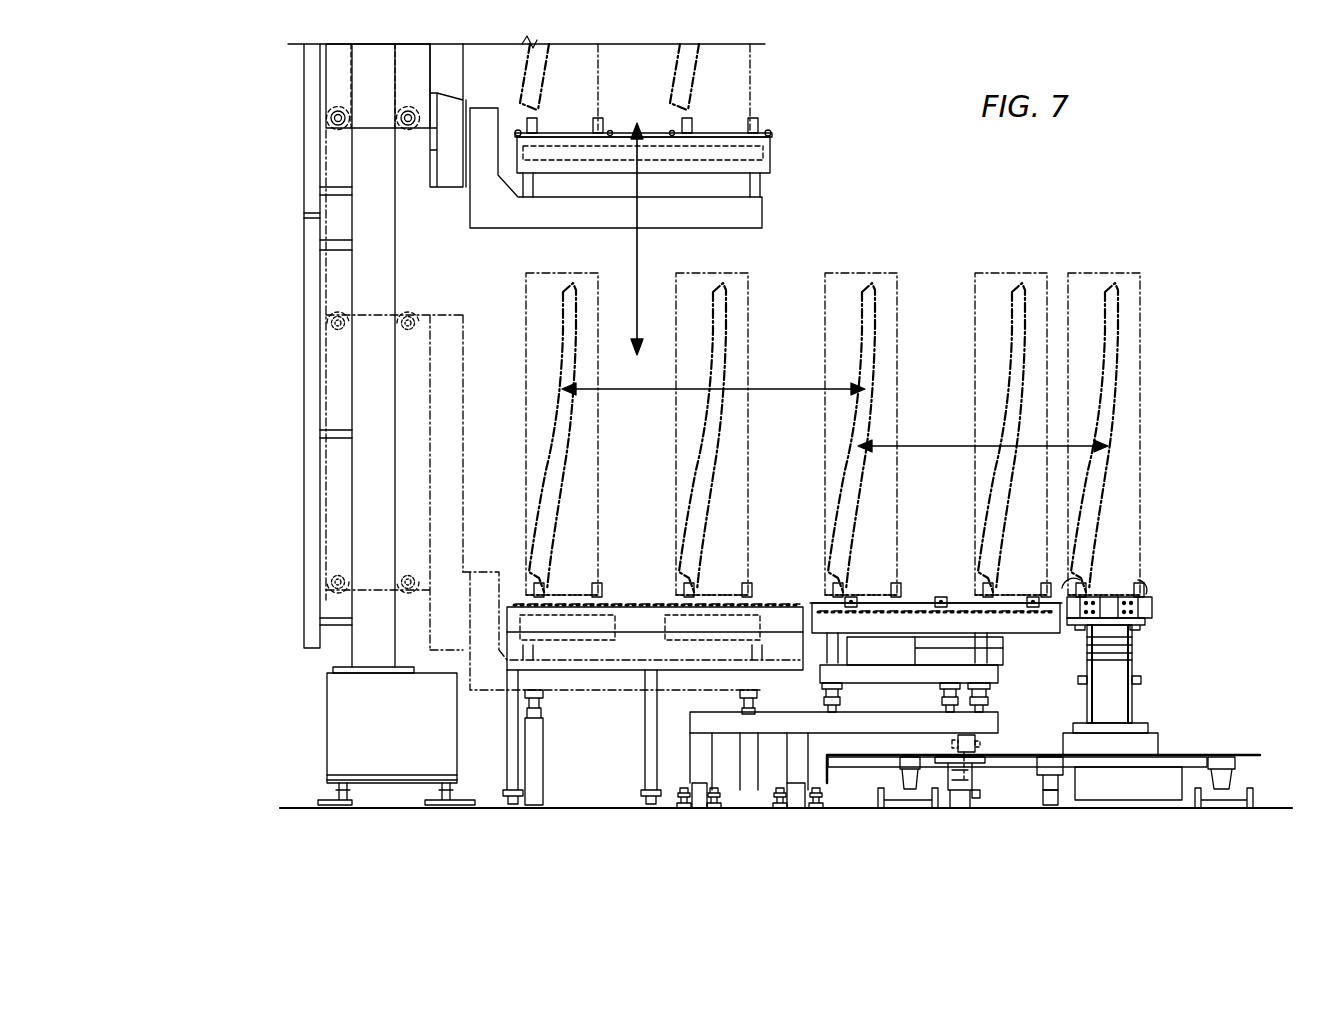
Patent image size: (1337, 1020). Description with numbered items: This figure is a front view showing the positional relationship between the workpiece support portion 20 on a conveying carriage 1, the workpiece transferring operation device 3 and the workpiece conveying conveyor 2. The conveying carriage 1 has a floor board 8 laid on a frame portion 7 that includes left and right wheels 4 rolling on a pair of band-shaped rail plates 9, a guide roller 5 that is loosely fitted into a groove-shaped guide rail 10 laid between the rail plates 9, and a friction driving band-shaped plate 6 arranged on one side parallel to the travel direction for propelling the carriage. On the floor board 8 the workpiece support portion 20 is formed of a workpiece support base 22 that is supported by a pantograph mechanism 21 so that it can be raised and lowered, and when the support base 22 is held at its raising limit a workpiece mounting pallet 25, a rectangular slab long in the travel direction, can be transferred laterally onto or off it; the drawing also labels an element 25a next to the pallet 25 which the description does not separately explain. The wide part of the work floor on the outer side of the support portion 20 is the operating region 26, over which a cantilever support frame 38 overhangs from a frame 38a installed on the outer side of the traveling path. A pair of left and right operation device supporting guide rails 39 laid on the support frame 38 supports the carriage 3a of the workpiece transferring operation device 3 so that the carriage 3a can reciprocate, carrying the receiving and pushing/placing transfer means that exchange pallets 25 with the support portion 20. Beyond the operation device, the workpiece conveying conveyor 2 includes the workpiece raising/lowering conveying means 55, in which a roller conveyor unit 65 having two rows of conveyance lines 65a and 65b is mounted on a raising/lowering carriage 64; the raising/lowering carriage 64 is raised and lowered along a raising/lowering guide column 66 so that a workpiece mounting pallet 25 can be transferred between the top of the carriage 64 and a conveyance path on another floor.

The conveying carriage 1 is at (1218, 755).
The workpiece conveying conveyor 2 is at (625, 572).
The workpiece transferring operation device 3 is at (915, 570).
The carriage 3a is at (940, 675).
The wheels 4 is at (905, 797).
The guide roller 5 is at (1052, 800).
The friction driving band-shaped plate 6 is at (815, 785).
The frame portion 7 is at (1135, 765).
The floor board 8 is at (1260, 753).
The band-shaped rail plates 9 is at (895, 805).
The groove-shaped guide rail 10 is at (1060, 797).
The workpiece support portion 20 is at (1152, 597).
The pantograph mechanism 21 is at (1133, 657).
The workpiece support base 22 is at (1143, 621).
The workpiece mounting pallet 25 is at (572, 140).
The workpiece support portion 25a is at (1092, 596).
The operating region 26 is at (925, 750).
The cantilever support frame 38 is at (910, 728).
The frame 38a is at (790, 757).
The operation device supporting guide rails 39 is at (825, 705).
The workpiece raising/lowering conveying means 55 is at (295, 380).
The raising/lowering carriage 64 is at (495, 680).
The roller conveyor unit 65 is at (650, 128).
The conveyance line 65a is at (545, 110).
The conveyance line 65b is at (734, 110).
The raising/lowering guide column 66 is at (373, 275).